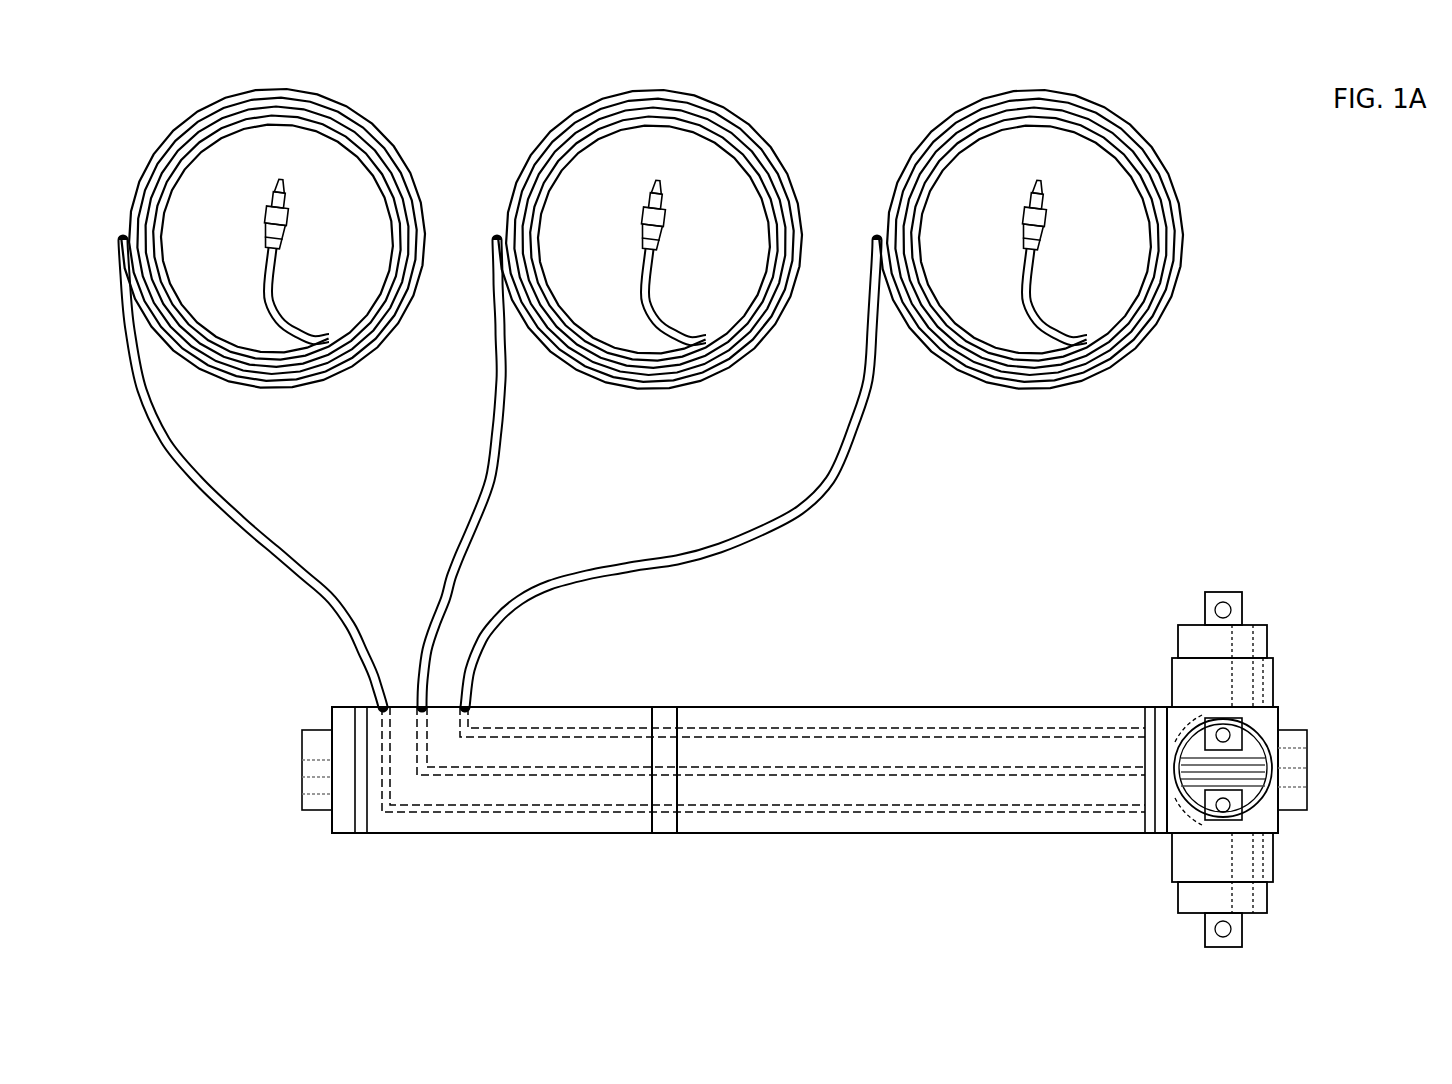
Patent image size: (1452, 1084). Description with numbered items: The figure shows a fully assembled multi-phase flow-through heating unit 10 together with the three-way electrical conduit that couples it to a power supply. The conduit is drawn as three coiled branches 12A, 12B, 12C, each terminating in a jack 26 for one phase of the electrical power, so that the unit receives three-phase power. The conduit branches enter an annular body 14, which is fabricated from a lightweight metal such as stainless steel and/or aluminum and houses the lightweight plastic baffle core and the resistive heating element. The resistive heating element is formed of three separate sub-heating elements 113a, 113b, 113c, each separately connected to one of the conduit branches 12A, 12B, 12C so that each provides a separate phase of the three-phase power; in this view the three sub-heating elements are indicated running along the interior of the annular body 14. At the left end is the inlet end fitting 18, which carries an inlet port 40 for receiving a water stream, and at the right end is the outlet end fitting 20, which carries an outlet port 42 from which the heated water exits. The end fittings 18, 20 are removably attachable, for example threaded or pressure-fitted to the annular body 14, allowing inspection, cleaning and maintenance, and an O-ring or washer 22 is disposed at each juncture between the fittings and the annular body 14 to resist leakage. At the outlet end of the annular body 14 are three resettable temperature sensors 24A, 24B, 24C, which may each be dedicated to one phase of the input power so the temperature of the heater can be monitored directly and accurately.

The heating unit 10 is at (1332, 351).
The three-way electrical conduit (first phase) 12A is at (195, 110).
The three-way electrical conduit (second phase) 12B is at (572, 110).
The three-way electrical conduit (third phase) 12C is at (952, 110).
The jack 26 is at (265, 230).
The annular body 14 is at (956, 836).
The inlet end fitting 18 is at (345, 830).
The O-ring 22 is at (362, 707).
The inlet port 40 is at (300, 762).
The first sub-heating element 113a is at (999, 805).
The second sub-heating element 113b is at (883, 768).
The third sub-heating element 113c is at (768, 723).
The outlet end fitting 20 is at (1270, 718).
The first resettable temperature sensor 24A is at (1273, 640).
The second resettable temperature sensor 24B is at (1265, 765).
The third resettable temperature sensor 24C is at (1268, 895).
The outlet port 42 is at (1307, 785).